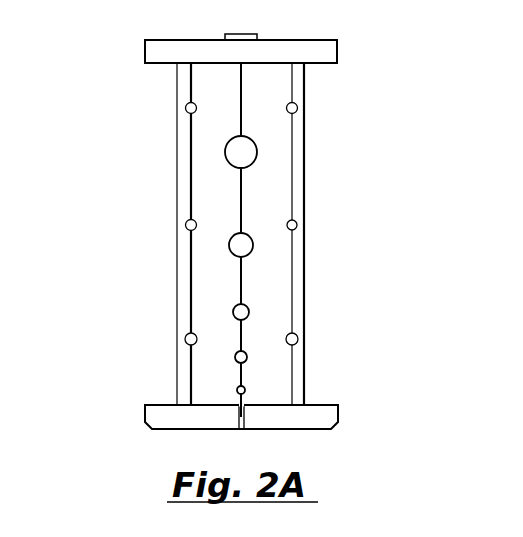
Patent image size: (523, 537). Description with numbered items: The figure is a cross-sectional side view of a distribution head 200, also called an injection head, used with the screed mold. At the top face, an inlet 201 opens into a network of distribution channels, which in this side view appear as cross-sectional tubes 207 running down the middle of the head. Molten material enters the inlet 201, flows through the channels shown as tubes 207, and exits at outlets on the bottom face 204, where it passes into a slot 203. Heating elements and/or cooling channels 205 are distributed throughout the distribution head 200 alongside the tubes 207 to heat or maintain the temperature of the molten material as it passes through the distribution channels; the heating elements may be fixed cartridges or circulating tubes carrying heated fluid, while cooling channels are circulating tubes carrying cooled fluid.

The distribution head 200 is at (318, 160).
The inlet 201 is at (240, 36).
The slot 203 is at (240, 418).
The bottom face 204 is at (178, 430).
The heating elements and/or cooling channels 205 is at (297, 228).
The cross-sectional tubes 207 is at (240, 243).